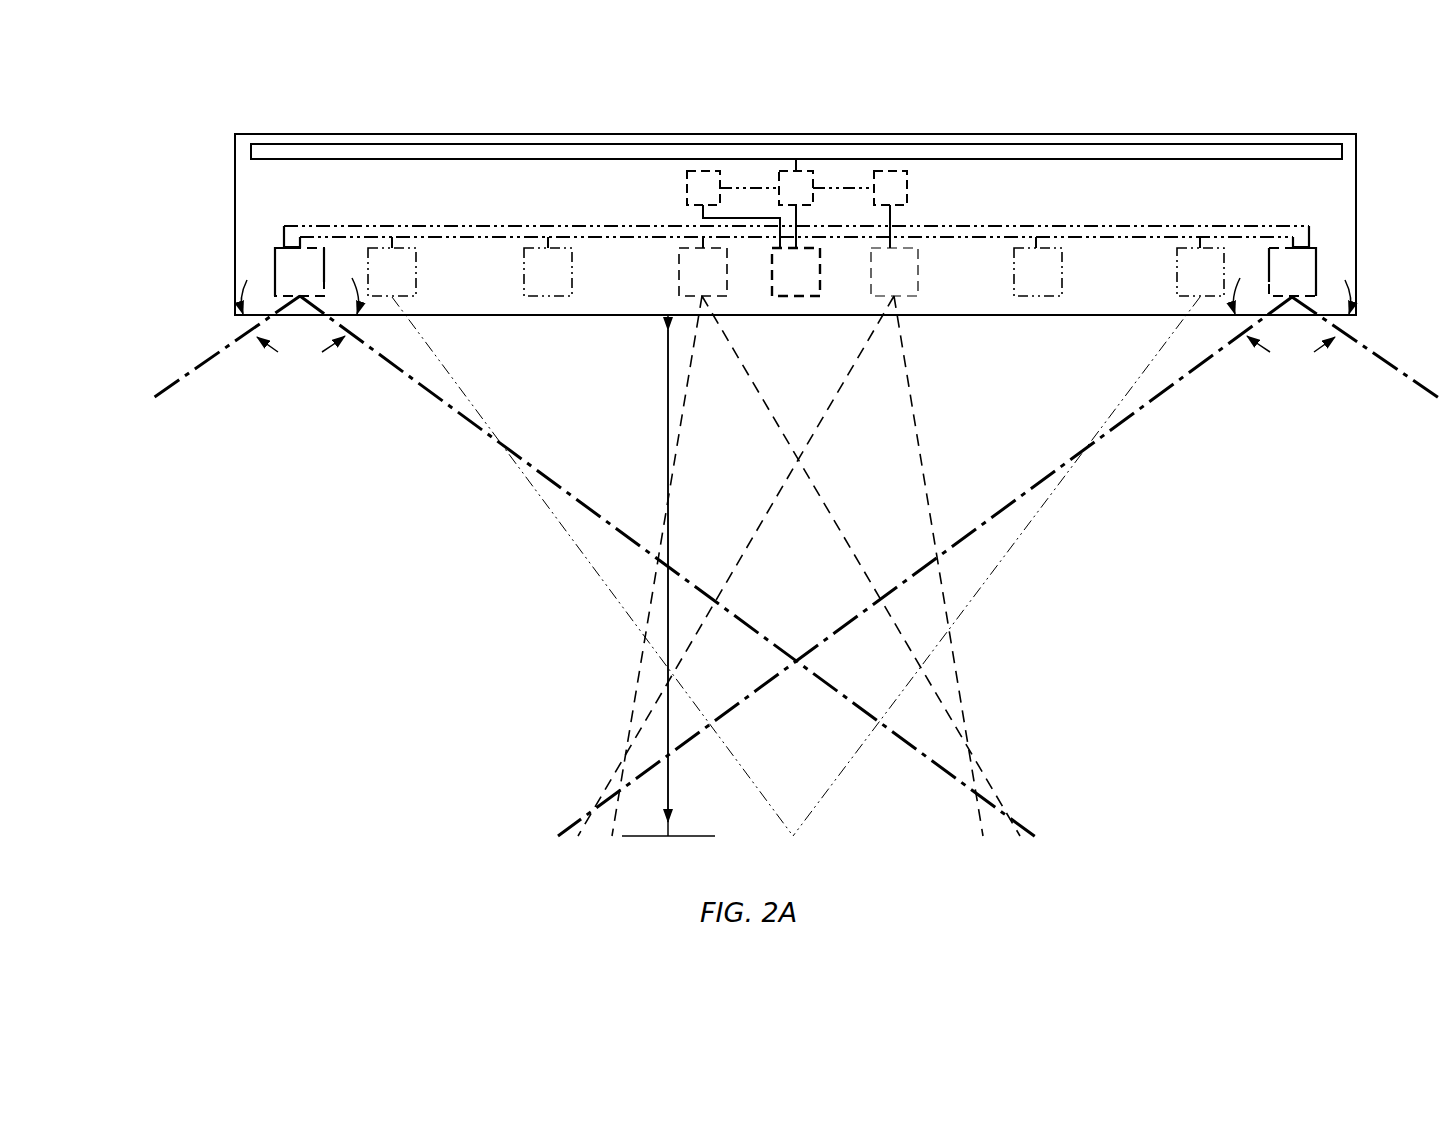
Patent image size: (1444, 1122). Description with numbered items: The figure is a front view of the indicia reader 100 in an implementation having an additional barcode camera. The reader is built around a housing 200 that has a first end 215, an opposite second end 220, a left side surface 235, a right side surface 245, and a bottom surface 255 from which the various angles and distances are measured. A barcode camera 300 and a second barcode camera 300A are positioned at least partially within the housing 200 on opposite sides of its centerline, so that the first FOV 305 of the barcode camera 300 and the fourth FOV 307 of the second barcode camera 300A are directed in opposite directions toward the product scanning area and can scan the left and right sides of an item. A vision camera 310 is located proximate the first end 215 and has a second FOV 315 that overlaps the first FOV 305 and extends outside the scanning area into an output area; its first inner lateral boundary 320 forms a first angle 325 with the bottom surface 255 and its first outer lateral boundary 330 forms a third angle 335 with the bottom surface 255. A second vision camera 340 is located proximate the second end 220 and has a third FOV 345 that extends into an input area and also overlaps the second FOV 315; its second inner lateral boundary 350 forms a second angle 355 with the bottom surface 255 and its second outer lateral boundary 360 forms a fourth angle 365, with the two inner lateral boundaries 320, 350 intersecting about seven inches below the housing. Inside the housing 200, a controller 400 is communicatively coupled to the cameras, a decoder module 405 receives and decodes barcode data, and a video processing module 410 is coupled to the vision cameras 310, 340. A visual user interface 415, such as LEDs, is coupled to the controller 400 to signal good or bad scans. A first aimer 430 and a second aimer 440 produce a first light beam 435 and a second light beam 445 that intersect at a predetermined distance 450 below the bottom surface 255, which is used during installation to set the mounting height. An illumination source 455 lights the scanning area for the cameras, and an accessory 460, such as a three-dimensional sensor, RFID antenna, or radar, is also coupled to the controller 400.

The indicia reader 100 is at (185, 70).
The housing 200 is at (1219, 128).
The first end 215 is at (255, 128).
The second end 220 is at (1343, 128).
The left side surface 235 is at (235, 223).
The right side surface 245 is at (1356, 224).
The bottom surface 255 is at (585, 318).
The barcode camera 300 is at (910, 275).
The second barcode camera 300A is at (688, 274).
The first FOV 305 is at (920, 440).
The fourth FOV 307 is at (668, 466).
The vision camera 310 is at (283, 285).
The second FOV 315 is at (437, 399).
The first inner lateral boundary 320 is at (387, 362).
The first angle 325 is at (353, 320).
The first outer lateral boundary 330 is at (177, 383).
The third angle 335 is at (250, 330).
The second vision camera 340 is at (1305, 287).
The third FOV 345 is at (1155, 398).
The second inner lateral boundary 350 is at (1222, 347).
The second angle 355 is at (1250, 323).
The second outer lateral boundary 360 is at (1398, 378).
The fourth angle 365 is at (1347, 322).
The controller 400 is at (800, 178).
The decoder module 405 is at (709, 170).
The video processing module 410 is at (897, 176).
The visual user interface 415 is at (609, 152).
The first aimer 430 is at (377, 260).
The first light beam 435 is at (475, 408).
The second aimer 440 is at (1188, 260).
The second light beam 445 is at (1100, 427).
The predetermined distance 450 is at (670, 797).
The illumination source 455 is at (788, 285).
The accessory 460 is at (538, 260).